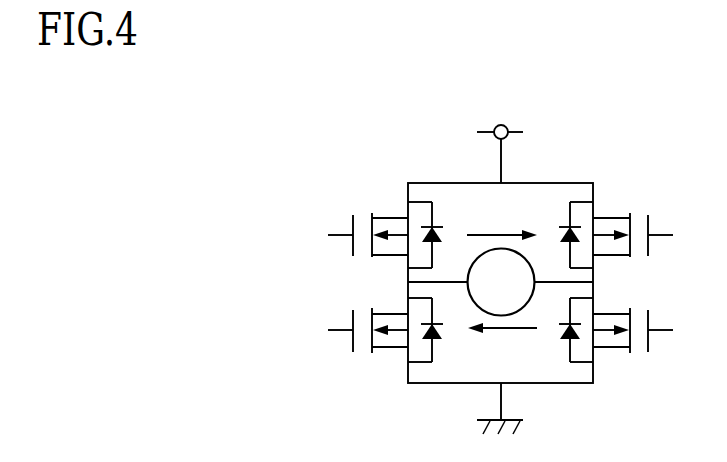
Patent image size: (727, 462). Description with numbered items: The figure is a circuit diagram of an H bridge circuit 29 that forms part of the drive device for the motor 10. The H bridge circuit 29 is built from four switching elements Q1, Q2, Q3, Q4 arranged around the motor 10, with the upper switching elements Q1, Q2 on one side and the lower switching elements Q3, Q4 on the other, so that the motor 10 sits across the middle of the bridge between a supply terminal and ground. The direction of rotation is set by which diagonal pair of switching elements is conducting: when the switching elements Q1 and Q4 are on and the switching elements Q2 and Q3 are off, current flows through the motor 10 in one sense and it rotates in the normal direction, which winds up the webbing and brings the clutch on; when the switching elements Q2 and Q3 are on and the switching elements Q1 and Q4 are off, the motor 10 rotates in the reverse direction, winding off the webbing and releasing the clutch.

The H bridge circuit 29 is at (268, 227).
The motor 10 is at (530, 257).
The switching element Q1 is at (385, 225).
The switching element Q2 is at (616, 225).
The switching element Q3 is at (385, 320).
The switching element Q4 is at (616, 320).